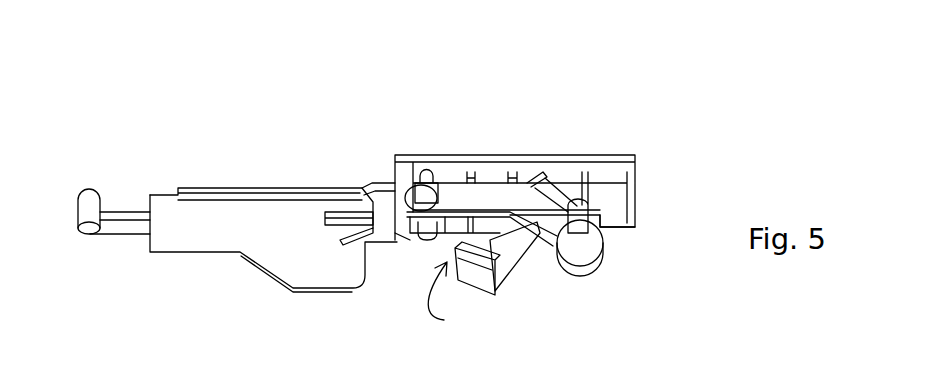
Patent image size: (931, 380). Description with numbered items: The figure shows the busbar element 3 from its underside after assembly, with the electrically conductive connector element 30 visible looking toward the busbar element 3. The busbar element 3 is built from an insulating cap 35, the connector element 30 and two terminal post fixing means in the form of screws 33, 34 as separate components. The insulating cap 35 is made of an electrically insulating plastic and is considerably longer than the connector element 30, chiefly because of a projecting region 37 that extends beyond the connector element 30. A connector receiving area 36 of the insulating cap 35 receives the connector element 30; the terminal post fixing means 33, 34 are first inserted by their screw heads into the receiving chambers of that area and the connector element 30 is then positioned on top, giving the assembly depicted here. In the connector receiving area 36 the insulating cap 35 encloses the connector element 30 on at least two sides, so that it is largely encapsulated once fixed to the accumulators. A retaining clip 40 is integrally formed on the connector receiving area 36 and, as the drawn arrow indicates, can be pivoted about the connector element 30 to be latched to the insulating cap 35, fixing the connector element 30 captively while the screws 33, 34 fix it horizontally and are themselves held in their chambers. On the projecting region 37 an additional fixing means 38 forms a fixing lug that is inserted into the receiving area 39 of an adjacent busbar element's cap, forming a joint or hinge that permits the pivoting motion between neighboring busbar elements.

The busbar element 3 is at (279, 92).
The connector element 30 is at (488, 200).
The terminal post fixing means 33 is at (427, 177).
The terminal post fixing means 34 is at (578, 205).
The insulating cap 35 is at (666, 195).
The connector receiving area 36 is at (447, 237).
The projecting region 37 is at (255, 270).
The additional fixing means 38 is at (89, 233).
The receiving area 39 is at (375, 200).
The retaining clip 40 is at (500, 284).